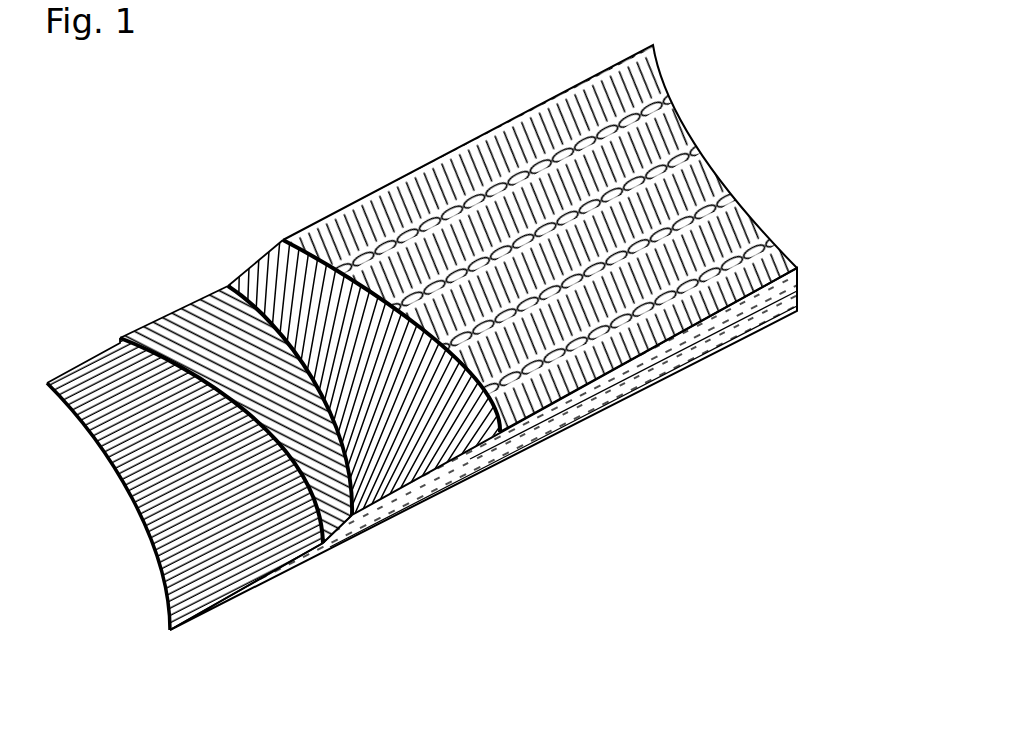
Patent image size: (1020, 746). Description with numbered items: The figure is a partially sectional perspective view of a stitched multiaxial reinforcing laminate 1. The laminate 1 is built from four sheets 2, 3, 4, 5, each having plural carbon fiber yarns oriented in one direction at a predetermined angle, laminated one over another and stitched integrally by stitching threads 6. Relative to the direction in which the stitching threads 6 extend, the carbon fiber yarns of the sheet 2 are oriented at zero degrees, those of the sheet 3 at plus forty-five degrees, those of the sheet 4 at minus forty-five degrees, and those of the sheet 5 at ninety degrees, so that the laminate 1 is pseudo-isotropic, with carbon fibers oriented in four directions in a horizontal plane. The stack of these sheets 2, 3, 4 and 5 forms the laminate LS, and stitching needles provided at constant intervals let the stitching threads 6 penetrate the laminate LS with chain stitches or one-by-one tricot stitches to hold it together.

The stitched multiaxial reinforcing laminate 1 is at (510, 373).
The sheet 2 is at (232, 588).
The sheet 3 is at (163, 315).
The sheet 4 is at (273, 283).
The sheet 5 is at (530, 133).
The stitching threads 6 is at (667, 98).
The laminate LS is at (767, 338).